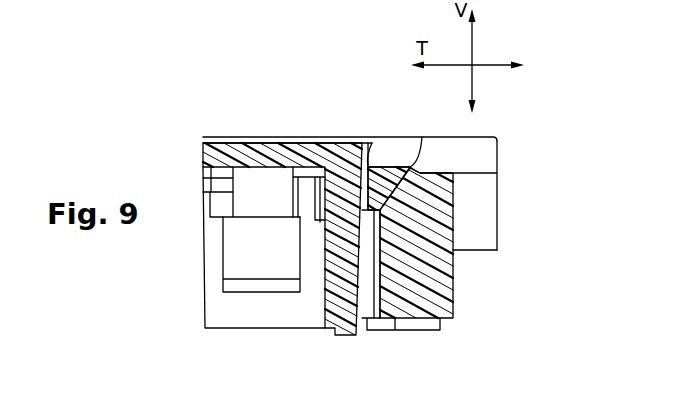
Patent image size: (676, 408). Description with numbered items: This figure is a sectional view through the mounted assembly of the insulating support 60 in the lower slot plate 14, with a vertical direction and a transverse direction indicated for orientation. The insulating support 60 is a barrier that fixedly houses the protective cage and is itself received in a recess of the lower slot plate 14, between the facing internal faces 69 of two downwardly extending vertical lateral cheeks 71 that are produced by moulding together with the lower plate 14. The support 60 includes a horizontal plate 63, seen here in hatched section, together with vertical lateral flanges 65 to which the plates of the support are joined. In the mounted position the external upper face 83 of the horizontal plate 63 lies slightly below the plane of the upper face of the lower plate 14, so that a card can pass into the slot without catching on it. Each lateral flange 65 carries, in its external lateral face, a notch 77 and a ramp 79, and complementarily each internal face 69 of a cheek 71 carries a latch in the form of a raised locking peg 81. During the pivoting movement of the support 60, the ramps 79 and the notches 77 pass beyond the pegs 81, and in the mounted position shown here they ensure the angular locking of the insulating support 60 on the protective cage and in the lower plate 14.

The lower slot plate 14 is at (430, 161).
The insulating support 60 is at (311, 304).
The horizontal plate 63 is at (259, 147).
The vertical lateral flange 65 is at (372, 248).
The internal face 69 is at (345, 240).
The vertical lateral cheek 71 is at (440, 262).
The notch 77 is at (368, 158).
The ramp 79 is at (362, 316).
The locking peg 81 is at (430, 218).
The external upper face 83 is at (286, 147).